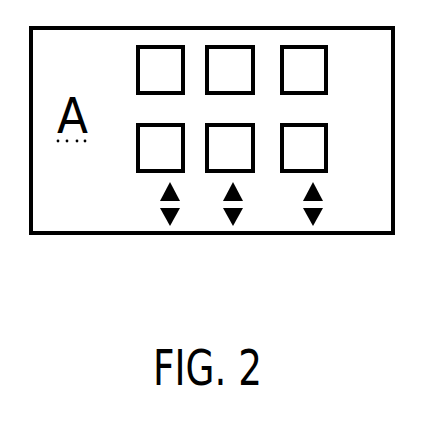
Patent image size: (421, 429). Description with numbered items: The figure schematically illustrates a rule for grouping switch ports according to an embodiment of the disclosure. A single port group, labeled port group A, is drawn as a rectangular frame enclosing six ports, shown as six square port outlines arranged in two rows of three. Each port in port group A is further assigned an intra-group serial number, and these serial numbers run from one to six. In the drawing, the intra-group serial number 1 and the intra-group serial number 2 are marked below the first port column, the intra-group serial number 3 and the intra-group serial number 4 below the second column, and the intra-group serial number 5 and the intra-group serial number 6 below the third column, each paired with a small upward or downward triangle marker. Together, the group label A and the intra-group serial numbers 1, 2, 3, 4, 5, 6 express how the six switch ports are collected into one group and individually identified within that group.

The intra-group serial number 1 is at (161, 190).
The intra-group serial number 2 is at (161, 220).
The intra-group serial number 3 is at (225, 190).
The intra-group serial number 4 is at (224, 220).
The intra-group serial number 5 is at (305, 190).
The intra-group serial number 6 is at (304, 220).